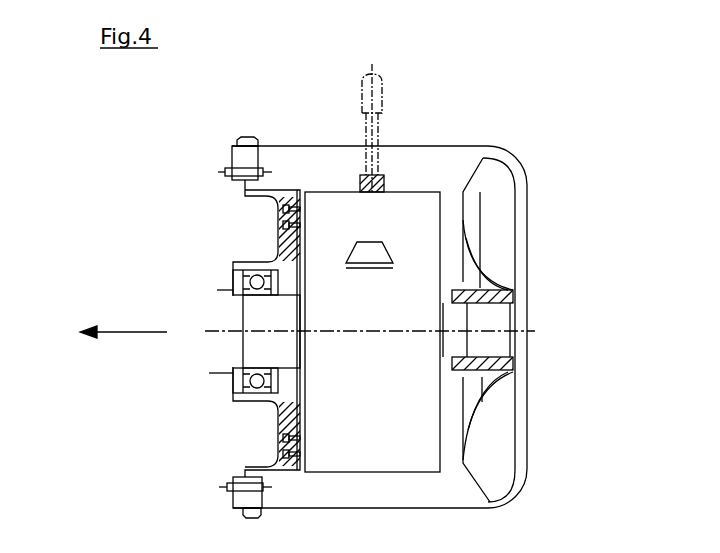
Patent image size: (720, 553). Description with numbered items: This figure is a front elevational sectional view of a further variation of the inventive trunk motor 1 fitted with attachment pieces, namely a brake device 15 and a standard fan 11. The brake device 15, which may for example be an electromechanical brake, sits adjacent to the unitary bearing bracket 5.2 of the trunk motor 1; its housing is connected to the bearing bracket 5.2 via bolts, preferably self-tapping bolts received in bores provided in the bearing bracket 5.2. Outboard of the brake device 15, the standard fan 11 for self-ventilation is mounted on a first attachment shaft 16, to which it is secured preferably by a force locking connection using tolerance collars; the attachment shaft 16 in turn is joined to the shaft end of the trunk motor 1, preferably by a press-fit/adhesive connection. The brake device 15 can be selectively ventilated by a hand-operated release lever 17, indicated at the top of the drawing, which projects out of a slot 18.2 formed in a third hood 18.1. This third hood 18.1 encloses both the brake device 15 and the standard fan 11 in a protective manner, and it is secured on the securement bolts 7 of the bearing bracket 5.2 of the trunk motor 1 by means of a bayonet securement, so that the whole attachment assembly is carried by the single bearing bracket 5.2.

The trunk motor 1 is at (36, 344).
The unitary bearing bracket 5.2 is at (282, 250).
The securement bolts 7 is at (254, 135).
The standard fan 11 is at (498, 437).
The brake device 15 is at (397, 220).
The first attachment shaft 16 is at (490, 328).
The hand-operated release lever 17 is at (374, 106).
The third hood 18.1 is at (528, 198).
The slot 18.2 is at (400, 147).